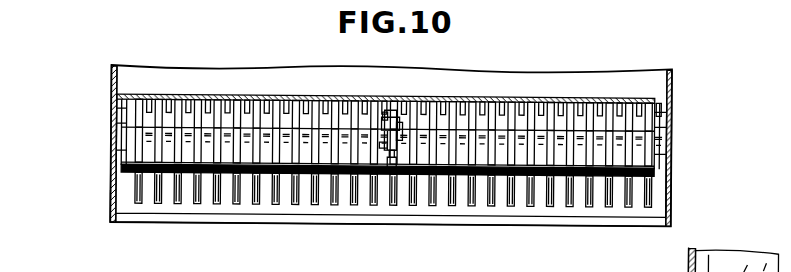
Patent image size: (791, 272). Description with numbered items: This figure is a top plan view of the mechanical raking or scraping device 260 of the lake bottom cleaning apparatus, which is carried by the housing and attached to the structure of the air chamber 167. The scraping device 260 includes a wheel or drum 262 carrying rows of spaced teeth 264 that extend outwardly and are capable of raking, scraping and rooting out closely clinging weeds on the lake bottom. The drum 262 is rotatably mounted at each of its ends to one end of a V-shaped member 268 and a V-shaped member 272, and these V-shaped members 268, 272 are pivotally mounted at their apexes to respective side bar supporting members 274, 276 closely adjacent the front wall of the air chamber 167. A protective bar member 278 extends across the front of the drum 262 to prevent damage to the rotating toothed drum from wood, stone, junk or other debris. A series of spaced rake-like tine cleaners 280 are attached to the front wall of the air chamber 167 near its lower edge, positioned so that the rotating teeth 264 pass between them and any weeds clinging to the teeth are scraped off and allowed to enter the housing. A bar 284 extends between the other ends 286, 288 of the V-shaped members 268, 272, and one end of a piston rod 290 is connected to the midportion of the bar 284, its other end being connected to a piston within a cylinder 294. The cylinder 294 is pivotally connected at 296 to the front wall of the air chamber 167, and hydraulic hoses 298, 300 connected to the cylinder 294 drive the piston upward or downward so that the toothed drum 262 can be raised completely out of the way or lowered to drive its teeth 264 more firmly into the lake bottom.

The air chamber 167 is at (238, 94).
The scraping device 260 is at (126, 227).
The drum 262 is at (445, 165).
The teeth 264 is at (198, 196).
The V-shaped member 268 is at (127, 124).
The V-shaped member 272 is at (661, 128).
The side bar supporting member 274 is at (111, 197).
The side bar supporting member 276 is at (672, 184).
The protective bar member 278 is at (577, 228).
The tine cleaners 280 is at (618, 113).
The bar 284 is at (495, 167).
The end of V-shaped member 286 is at (125, 158).
The end of V-shaped member 288 is at (656, 152).
The piston rod 290 is at (385, 168).
The cylinder 294 is at (403, 137).
The pivotal connection 296 is at (393, 108).
The hydraulic hose 298 is at (382, 143).
The hydraulic hose 300 is at (386, 110).